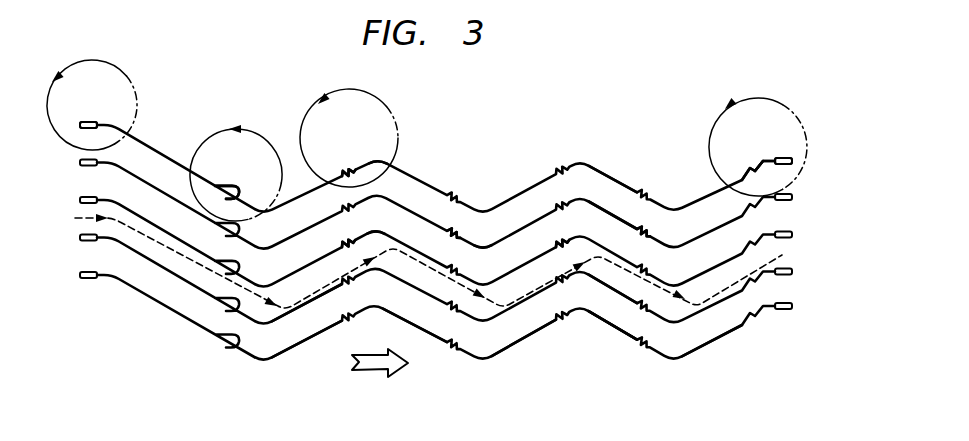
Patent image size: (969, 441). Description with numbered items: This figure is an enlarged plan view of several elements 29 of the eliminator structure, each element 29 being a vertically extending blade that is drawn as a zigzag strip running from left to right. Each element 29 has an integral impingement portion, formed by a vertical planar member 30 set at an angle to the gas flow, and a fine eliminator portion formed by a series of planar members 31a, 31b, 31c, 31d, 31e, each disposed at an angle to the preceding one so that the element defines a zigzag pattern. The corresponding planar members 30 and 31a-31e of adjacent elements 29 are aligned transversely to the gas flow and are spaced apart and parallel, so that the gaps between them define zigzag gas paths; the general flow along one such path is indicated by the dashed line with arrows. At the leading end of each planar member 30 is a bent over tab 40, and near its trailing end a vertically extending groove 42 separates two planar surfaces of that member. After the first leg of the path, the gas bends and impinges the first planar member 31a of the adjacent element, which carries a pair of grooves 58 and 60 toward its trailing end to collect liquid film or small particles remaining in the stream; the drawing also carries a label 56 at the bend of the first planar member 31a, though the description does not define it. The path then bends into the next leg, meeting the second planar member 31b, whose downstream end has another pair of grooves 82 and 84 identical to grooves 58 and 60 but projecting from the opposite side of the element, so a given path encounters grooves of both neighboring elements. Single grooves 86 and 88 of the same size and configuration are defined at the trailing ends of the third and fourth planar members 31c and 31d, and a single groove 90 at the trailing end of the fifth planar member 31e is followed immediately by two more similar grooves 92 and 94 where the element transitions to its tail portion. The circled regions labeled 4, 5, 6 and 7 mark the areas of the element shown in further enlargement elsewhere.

The detail view circle FIG. 4 is at (90, 105).
The detail view circle FIG. 5 is at (236, 173).
The detail view circle FIG. 6 is at (349, 138).
The detail view circle FIG. 7 is at (758, 147).
The element 29 is at (626, 213).
The vertical planar member 30 is at (170, 234).
The first planar member 31a is at (316, 300).
The second planar member 31b is at (421, 330).
The third planar member 31c is at (537, 332).
The fourth planar member 31d is at (619, 331).
The fifth planar member 31e is at (722, 335).
The bent over tab 40 is at (88, 122).
The vertically extending groove 42 is at (233, 186).
The notch 56 is at (345, 173).
The groove 58 is at (346, 246).
The groove 60 is at (360, 163).
The groove 82 is at (448, 236).
The groove 84 is at (467, 243).
The groove 86 is at (556, 244).
The groove 88 is at (643, 238).
The groove 90 is at (745, 165).
The groove 92 is at (757, 161).
The groove 94 is at (771, 160).